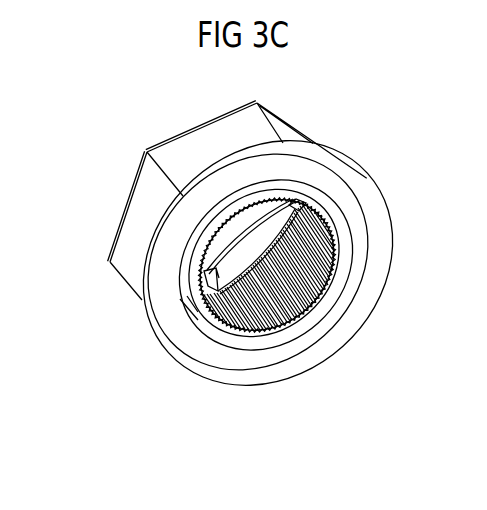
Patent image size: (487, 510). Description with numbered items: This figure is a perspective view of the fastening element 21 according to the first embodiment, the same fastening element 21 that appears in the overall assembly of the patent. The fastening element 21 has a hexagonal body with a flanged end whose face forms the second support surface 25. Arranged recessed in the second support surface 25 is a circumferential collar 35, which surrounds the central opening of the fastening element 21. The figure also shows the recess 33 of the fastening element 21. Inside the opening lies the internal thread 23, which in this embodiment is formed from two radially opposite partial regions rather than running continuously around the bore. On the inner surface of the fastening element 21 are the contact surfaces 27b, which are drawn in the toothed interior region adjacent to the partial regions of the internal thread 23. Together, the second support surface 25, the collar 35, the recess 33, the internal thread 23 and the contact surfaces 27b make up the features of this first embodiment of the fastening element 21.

The fastening element 21 is at (217, 140).
The internal thread 23 is at (238, 280).
The second support surface 25 is at (345, 322).
The contact surfaces 27b is at (332, 238).
The recess 33 is at (350, 287).
The circumferential collar 35 is at (300, 323).